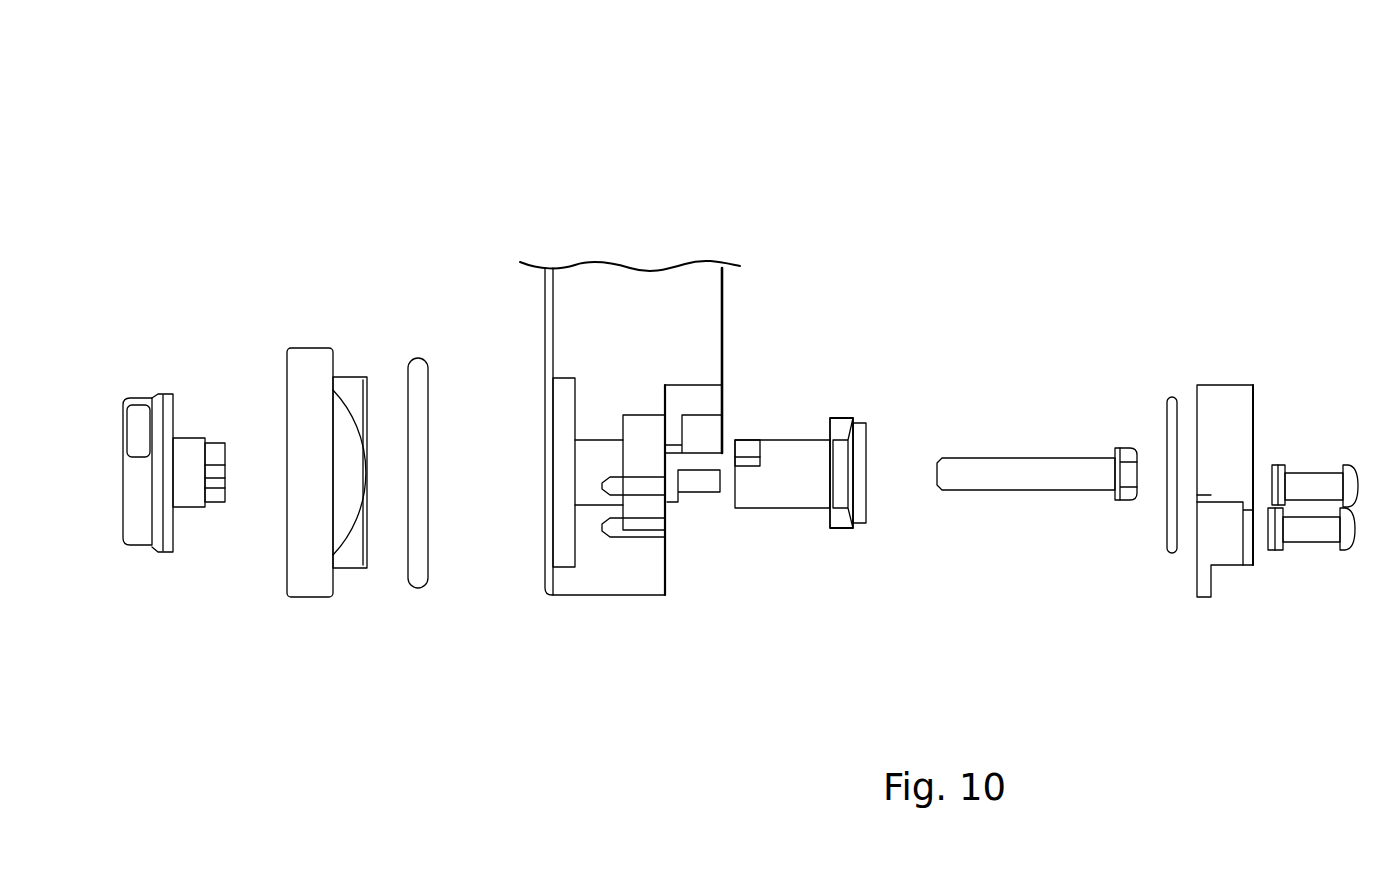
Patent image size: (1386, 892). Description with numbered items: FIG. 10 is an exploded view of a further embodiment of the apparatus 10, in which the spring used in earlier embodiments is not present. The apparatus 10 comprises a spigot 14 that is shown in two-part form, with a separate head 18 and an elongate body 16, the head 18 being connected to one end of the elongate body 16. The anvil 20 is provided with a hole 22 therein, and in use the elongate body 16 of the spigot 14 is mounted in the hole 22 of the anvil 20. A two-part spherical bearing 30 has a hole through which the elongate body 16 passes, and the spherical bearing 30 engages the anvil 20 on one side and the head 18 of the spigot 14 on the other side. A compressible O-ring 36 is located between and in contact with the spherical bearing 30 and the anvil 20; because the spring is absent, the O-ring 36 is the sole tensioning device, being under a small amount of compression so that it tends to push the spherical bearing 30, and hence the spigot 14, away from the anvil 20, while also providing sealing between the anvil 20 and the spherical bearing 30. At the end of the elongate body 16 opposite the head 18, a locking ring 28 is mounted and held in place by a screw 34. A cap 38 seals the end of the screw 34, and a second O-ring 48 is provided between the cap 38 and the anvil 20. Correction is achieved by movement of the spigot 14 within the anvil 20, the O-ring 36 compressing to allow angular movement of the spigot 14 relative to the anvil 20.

The apparatus 10 is at (356, 154).
The spigot 14 is at (142, 590).
The elongate body 16 is at (800, 462).
The head 18 is at (160, 394).
The anvil 20 is at (653, 303).
The hole 22 is at (595, 501).
The locking ring 28 is at (835, 508).
The two-part spherical bearing 30 is at (312, 360).
The screw 34 is at (1022, 468).
The O-ring 36 is at (423, 362).
The cap 38 is at (1227, 385).
The second O-ring 48 is at (1172, 395).